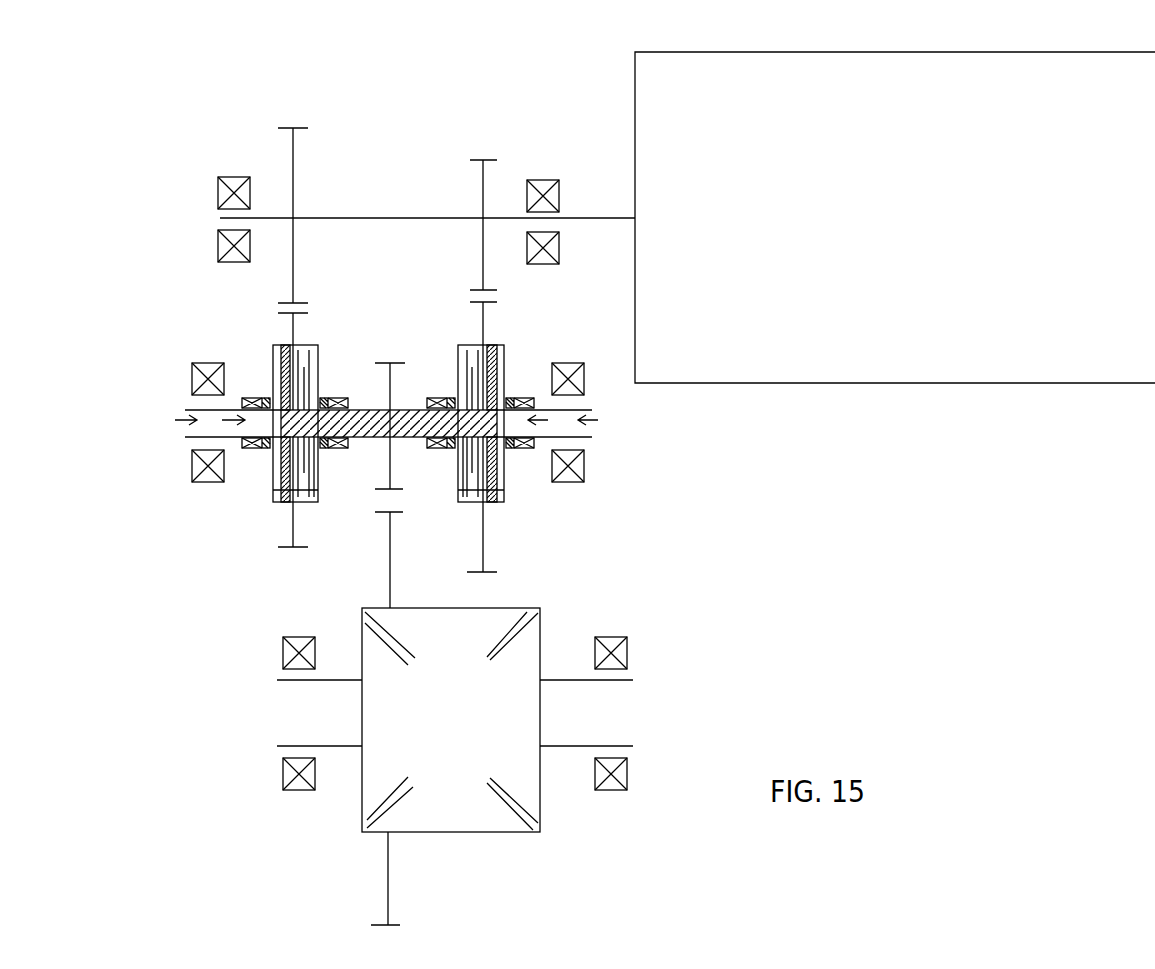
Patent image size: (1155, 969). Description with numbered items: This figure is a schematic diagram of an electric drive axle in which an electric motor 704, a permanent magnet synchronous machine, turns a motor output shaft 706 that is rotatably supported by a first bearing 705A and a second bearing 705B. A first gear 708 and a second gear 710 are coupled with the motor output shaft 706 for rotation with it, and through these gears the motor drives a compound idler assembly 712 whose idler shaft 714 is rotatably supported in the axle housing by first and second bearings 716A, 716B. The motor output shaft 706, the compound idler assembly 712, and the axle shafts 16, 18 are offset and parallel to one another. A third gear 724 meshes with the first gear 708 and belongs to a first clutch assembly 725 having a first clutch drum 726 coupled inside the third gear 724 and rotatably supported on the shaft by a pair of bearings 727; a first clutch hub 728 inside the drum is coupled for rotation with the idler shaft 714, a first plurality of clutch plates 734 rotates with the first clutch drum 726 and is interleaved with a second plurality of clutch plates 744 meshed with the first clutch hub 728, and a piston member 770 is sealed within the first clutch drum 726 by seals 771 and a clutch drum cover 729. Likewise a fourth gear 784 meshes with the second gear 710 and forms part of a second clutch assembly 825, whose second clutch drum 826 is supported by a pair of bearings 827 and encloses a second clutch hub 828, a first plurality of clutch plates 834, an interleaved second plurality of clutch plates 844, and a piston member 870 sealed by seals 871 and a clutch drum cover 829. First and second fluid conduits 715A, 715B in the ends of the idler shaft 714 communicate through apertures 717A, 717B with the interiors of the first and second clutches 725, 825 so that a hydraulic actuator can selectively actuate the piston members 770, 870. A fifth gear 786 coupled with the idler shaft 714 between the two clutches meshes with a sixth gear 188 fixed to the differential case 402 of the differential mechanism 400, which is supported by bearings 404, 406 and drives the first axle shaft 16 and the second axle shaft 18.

The electric motor 704 is at (866, 86).
The motor output shaft 706 is at (602, 216).
The first gear 708 is at (490, 158).
The second gear 710 is at (292, 127).
The fourth gear 784 is at (308, 306).
The piston member 770 is at (480, 345).
The first bearing 705A is at (560, 247).
The second bearing 705B is at (222, 243).
The first bearing 716A is at (572, 363).
The second bearing 716B is at (190, 378).
The first fluid conduit 715A is at (585, 413).
The second fluid conduit 715B is at (197, 412).
The compound idler assembly 712 is at (681, 471).
The idler shaft 714 is at (362, 415).
The fifth gear 786 is at (387, 407).
The second clutch assembly 825 is at (173, 538).
The second clutch hub 828 is at (272, 367).
The clutch drum cover 829 is at (266, 398).
The second plurality of clutch plates 844 is at (276, 440).
The second clutch drum 826 is at (310, 500).
The piston member 870 is at (278, 492).
The first plurality of clutch plates 834 is at (288, 502).
The seals 871 is at (262, 397).
The aperture 717B is at (268, 444).
The pair of bearings 827 is at (335, 448).
The first clutch assembly 725 is at (542, 514).
The first clutch drum 726 is at (472, 348).
The clutch drum cover 729 is at (500, 402).
The first clutch hub 728 is at (487, 455).
The first plurality of clutch plates 734 is at (465, 504).
The seals 771 is at (433, 398).
The second plurality of clutch plates 744 is at (458, 398).
The pair of bearings 727 is at (530, 398).
The aperture 717A is at (505, 400).
The third gear 724 is at (487, 543).
The differential mechanism 400 is at (571, 812).
The differential case 402 is at (362, 800).
The second axle shaft 18 is at (282, 680).
The first axle shaft 16 is at (627, 680).
The bearing 406 is at (283, 772).
The bearing 404 is at (620, 772).
The sixth gear 188 is at (388, 892).